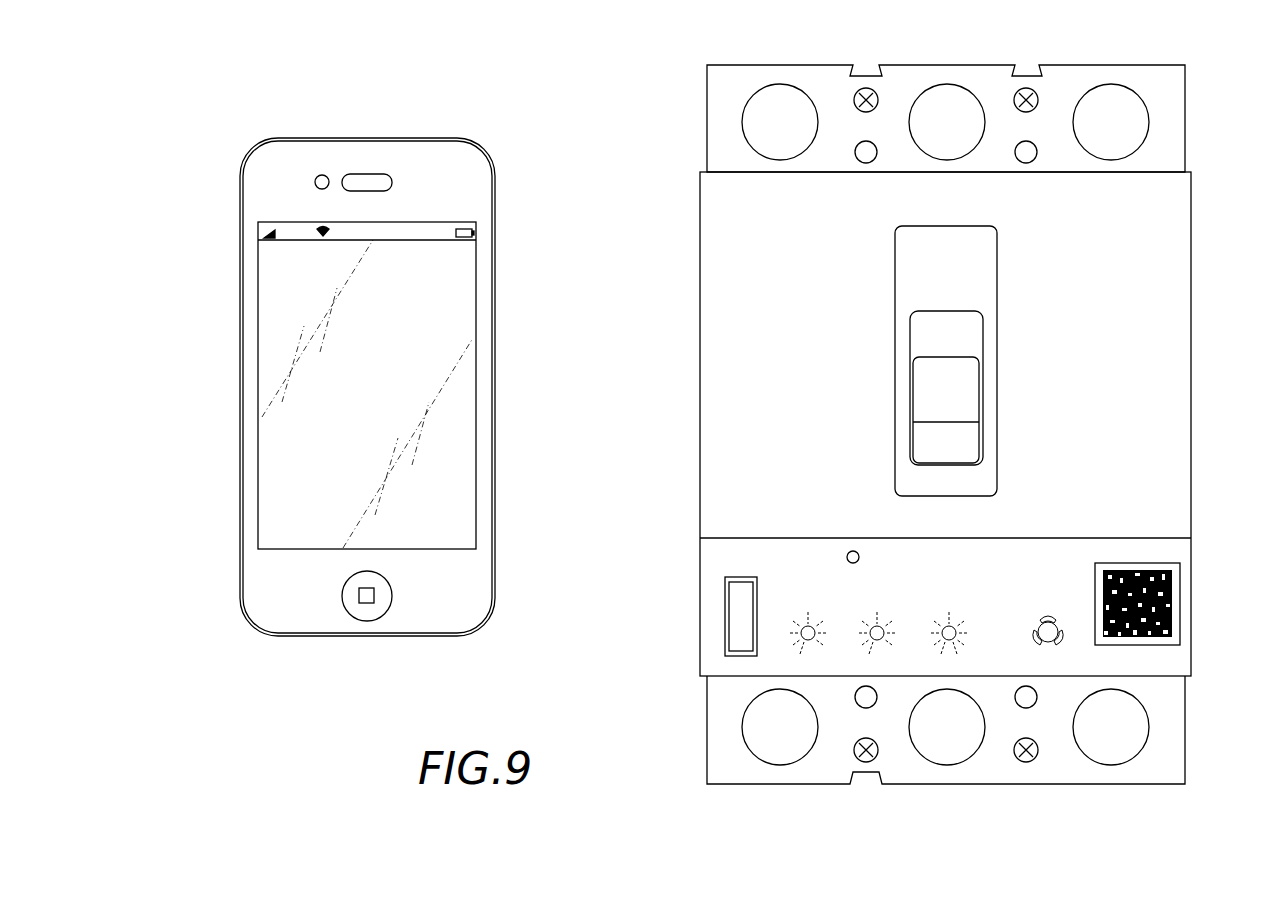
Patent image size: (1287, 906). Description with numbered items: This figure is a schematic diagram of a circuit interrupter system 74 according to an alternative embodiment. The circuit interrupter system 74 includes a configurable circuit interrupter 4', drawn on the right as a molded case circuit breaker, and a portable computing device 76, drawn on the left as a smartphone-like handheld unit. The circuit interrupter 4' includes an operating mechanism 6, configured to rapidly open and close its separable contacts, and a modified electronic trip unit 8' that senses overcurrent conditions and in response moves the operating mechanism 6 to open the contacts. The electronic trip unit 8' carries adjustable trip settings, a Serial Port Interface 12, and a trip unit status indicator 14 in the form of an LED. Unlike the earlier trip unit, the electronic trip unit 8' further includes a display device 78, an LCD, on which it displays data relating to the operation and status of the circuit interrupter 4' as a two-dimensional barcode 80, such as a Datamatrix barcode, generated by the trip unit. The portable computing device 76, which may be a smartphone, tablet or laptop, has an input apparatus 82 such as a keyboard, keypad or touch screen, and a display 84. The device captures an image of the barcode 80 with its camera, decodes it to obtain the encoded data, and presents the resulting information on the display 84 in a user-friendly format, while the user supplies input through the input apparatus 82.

The configurable circuit interrupter 4' is at (1235, 678).
The operating mechanism 6 is at (1175, 218).
The electronic trip unit 8' is at (1163, 569).
The Serial Port Interface 12 is at (741, 590).
The trip unit status indicator 14 is at (849, 551).
The circuit interrupter system 74 is at (598, 101).
The portable computing device 76 is at (540, 222).
The display device 78 is at (1180, 628).
The two-dimensional barcode 80 is at (1175, 578).
The input apparatus 82 is at (450, 534).
The display 84 is at (467, 410).